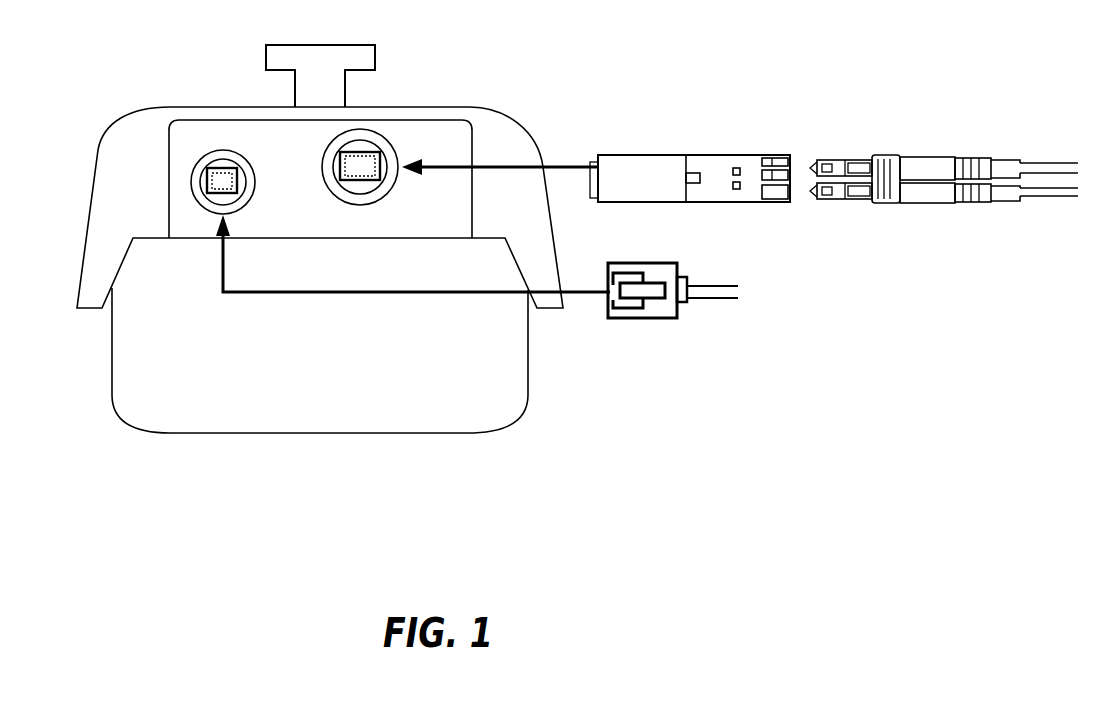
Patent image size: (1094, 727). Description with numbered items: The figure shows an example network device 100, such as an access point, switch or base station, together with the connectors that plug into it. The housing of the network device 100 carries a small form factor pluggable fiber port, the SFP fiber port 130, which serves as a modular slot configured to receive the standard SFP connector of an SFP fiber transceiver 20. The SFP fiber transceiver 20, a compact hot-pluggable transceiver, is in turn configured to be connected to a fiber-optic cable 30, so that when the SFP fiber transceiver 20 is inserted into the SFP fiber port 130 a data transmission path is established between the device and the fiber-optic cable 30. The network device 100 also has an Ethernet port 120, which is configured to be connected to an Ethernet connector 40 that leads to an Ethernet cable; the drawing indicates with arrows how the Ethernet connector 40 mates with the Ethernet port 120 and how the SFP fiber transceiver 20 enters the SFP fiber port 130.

The network device 100 is at (185, 105).
The Ethernet port 120 is at (236, 166).
The SFP fiber port 130 is at (367, 148).
The SFP fiber transceiver 20 is at (690, 155).
The fiber-optic cable 30 is at (875, 155).
The Ethernet connector 40 is at (625, 263).